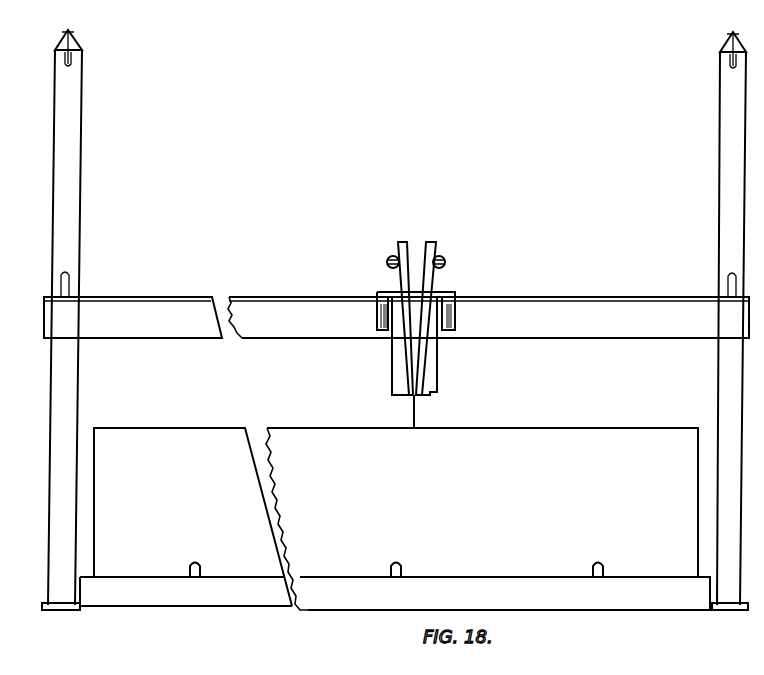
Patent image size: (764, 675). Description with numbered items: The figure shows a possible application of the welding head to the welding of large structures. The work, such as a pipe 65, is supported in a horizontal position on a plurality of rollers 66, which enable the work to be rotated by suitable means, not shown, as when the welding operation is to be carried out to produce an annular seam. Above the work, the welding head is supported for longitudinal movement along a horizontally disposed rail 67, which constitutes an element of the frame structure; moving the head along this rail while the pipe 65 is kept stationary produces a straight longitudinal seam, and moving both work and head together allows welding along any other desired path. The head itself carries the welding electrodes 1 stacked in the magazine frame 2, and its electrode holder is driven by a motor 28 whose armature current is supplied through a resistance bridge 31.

The welding electrodes 1 is at (414, 410).
The magazine frame 2 is at (392, 367).
The motor 28 is at (387, 262).
The resistance bridge 31 is at (445, 262).
The pipe 65 is at (533, 432).
The rollers 66 is at (196, 573).
The rail 67 is at (543, 308).